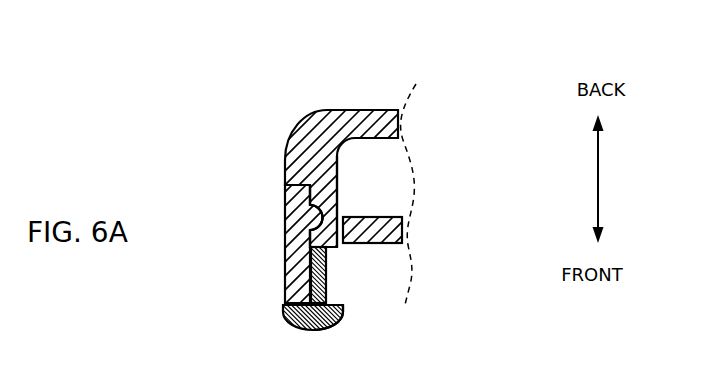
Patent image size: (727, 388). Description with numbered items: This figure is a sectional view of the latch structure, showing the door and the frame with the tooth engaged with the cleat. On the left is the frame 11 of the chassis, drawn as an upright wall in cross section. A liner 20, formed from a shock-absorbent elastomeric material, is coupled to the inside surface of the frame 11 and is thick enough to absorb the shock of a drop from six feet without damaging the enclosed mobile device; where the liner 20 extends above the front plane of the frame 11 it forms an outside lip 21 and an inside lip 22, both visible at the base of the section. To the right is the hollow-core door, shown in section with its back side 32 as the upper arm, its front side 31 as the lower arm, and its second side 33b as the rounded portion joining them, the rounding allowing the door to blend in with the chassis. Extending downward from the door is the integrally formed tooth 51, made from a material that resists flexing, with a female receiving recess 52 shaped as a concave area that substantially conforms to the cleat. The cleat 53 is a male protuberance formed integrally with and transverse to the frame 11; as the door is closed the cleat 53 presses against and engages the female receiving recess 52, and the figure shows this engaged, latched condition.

The frame 11 is at (278, 269).
The liner 20 is at (336, 291).
The outside lip 21 is at (287, 324).
The inside lip 22 is at (342, 328).
The front side 31 is at (383, 253).
The back side 32 is at (374, 101).
The second side 33b is at (303, 149).
The tooth 51 is at (346, 188).
The female receiving recess 52 is at (334, 234).
The cleat 53 is at (313, 211).